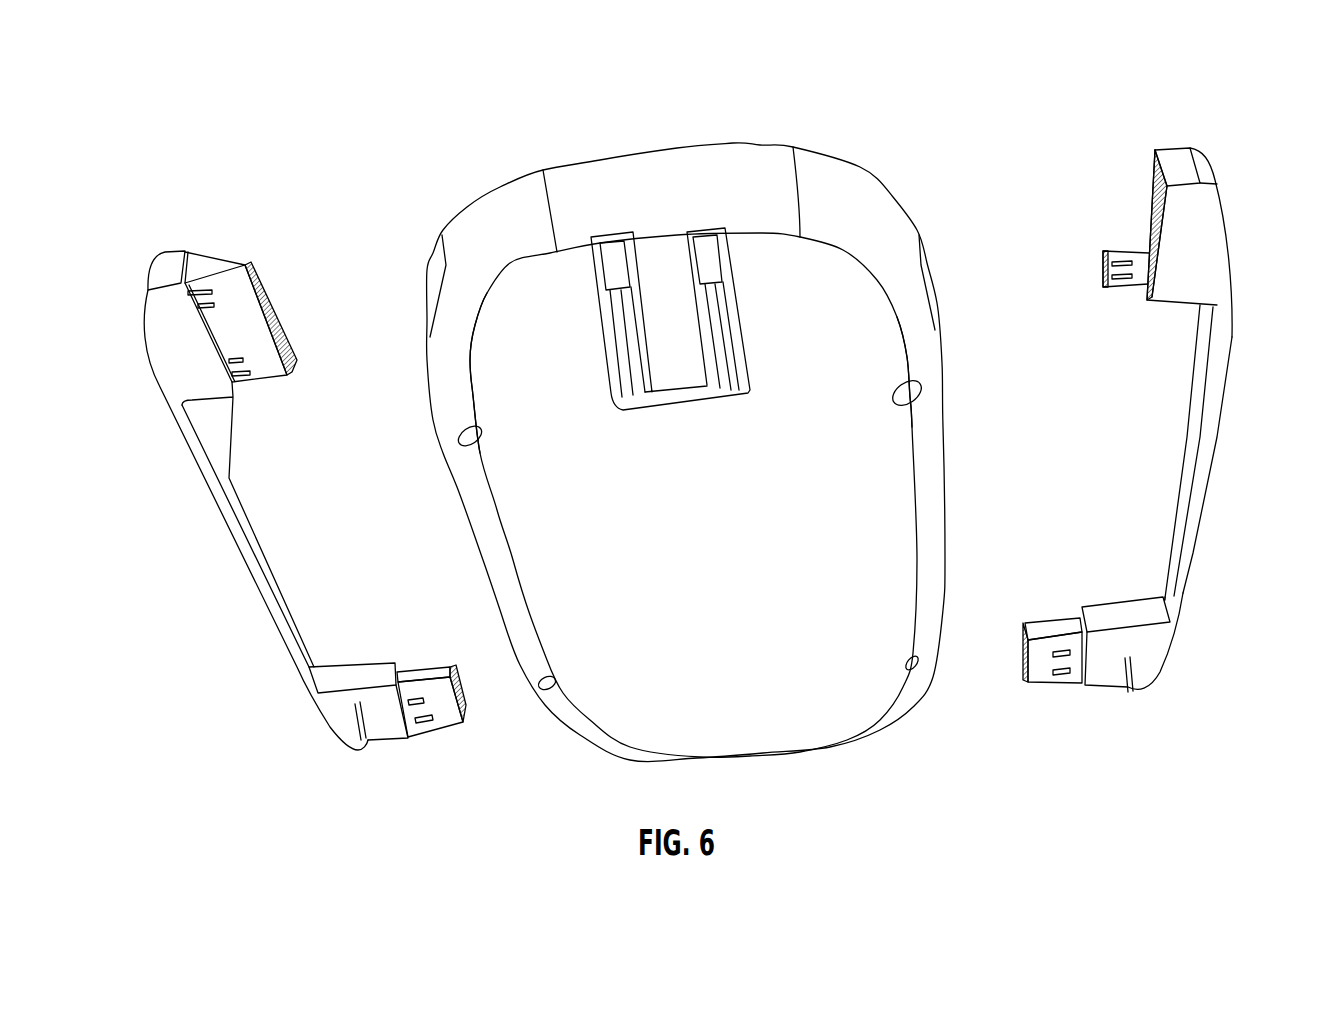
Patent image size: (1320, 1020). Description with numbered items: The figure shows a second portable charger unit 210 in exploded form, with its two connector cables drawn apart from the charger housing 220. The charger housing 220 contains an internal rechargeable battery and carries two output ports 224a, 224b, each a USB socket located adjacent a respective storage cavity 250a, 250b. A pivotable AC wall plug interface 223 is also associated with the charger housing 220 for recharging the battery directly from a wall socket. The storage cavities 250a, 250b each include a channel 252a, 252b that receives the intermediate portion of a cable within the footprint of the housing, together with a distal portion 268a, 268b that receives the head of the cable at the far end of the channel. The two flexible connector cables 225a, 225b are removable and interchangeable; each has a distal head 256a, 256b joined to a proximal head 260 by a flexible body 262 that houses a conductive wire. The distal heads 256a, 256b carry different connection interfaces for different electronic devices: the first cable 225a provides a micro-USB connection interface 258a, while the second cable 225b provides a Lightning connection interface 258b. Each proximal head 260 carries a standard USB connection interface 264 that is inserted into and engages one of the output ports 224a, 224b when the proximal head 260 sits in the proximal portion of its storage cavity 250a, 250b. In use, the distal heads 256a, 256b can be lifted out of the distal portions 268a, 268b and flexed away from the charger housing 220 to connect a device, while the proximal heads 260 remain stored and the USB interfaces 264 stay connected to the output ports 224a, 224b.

The charger unit 210 is at (833, 78).
The charger housing 220 is at (735, 148).
The AC wall plug interface 223 is at (597, 160).
The output port 224a is at (513, 664).
The output port 224b is at (937, 683).
The connector cable 225a is at (210, 506).
The connector cable 225b is at (1225, 420).
The storage cavity 250a is at (432, 410).
The storage cavity 250b is at (964, 404).
The channel 252a is at (460, 498).
The channel 252b is at (950, 465).
The distal head 256a is at (178, 262).
The distal head 256b is at (1177, 156).
The micro-USB connection interface 258a is at (224, 272).
The Lightning connection interface 258b is at (1128, 252).
The proximal head 260 is at (345, 730).
The flexible body 262 is at (250, 573).
The USB connection interface 264 is at (438, 720).
The distal portion 268a is at (433, 268).
The distal portion 268b is at (940, 256).